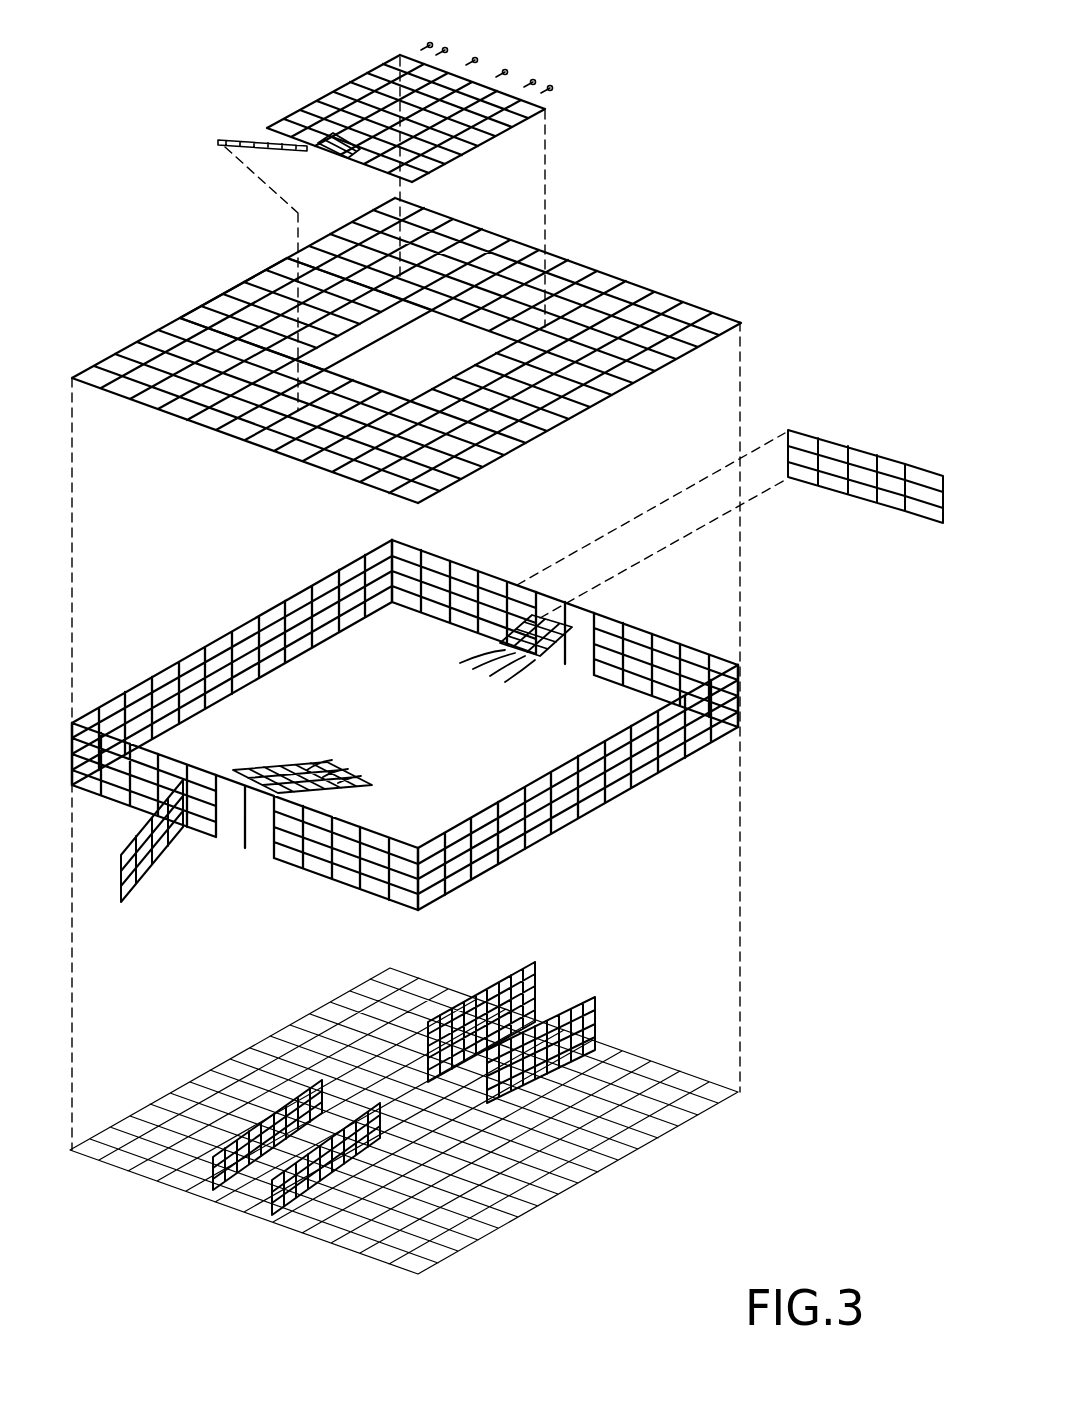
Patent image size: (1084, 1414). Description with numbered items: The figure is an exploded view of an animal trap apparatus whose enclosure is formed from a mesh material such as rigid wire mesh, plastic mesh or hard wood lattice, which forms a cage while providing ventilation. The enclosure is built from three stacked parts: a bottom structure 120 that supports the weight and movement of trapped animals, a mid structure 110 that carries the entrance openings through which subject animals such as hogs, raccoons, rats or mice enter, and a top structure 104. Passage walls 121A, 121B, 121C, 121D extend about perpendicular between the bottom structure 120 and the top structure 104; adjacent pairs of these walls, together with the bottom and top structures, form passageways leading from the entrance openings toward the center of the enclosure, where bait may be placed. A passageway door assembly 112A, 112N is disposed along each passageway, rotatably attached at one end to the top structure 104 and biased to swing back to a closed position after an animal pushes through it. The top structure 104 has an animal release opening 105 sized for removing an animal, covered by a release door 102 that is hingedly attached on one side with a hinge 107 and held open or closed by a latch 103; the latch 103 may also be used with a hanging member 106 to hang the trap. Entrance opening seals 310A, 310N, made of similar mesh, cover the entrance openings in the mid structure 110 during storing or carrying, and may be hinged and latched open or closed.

The release door 102 is at (340, 82).
The latch 103 is at (347, 163).
The top structure 104 is at (742, 318).
The animal release opening 105 is at (430, 365).
The hanging member 106 is at (218, 132).
The hinge 107 is at (422, 33).
The mid structure 110 is at (742, 688).
The passageway door assembly 112A is at (270, 770).
The passageway door assembly 112N is at (543, 660).
The bottom structure 120 is at (742, 1092).
The passage wall 121A is at (217, 1153).
The passage wall 121B is at (493, 985).
The passage wall 121C is at (573, 987).
The passage wall 121D is at (263, 1193).
The entrance opening seal 310A is at (143, 880).
The entrance opening seal 310N is at (890, 515).